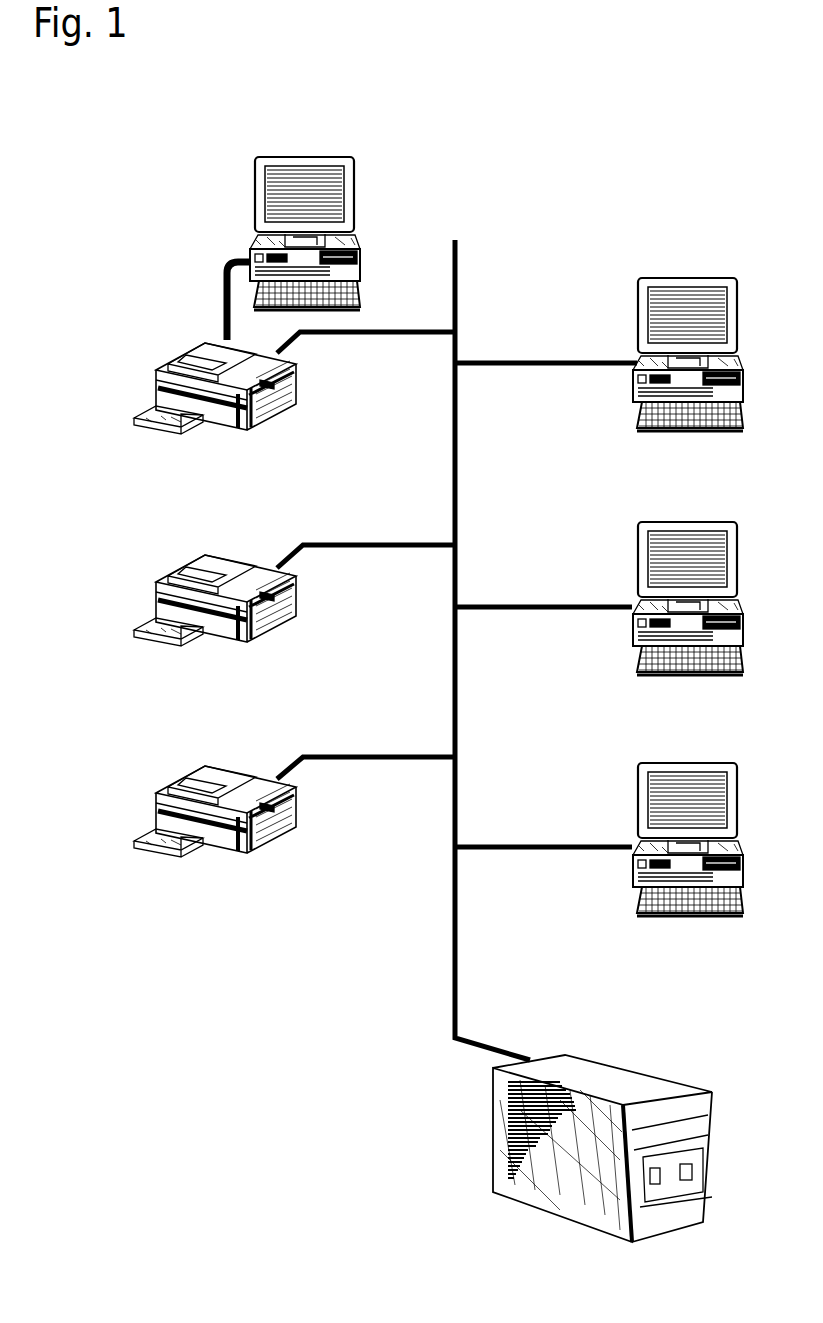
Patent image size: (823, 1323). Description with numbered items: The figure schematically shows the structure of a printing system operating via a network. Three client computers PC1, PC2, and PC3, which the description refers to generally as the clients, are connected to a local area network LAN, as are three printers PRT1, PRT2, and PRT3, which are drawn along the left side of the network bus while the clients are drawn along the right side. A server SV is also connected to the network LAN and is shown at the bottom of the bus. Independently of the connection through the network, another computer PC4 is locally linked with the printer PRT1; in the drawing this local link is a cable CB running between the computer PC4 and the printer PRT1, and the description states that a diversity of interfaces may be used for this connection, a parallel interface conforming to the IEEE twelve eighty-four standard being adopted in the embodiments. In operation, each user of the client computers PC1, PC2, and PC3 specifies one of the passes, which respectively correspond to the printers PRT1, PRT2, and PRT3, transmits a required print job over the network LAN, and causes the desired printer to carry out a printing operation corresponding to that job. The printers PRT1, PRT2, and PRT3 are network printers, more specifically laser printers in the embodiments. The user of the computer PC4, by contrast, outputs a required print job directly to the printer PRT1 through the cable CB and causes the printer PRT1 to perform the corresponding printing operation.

The local area network LAN is at (457, 643).
The cable CB is at (223, 295).
The client computer PC1 is at (667, 334).
The client computer PC2 is at (667, 577).
The client computer PC3 is at (667, 817).
The computer PC4 is at (328, 233).
The printer PRT1 is at (214, 371).
The printer PRT2 is at (208, 586).
The printer PRT3 is at (208, 797).
The server SV is at (602, 1143).